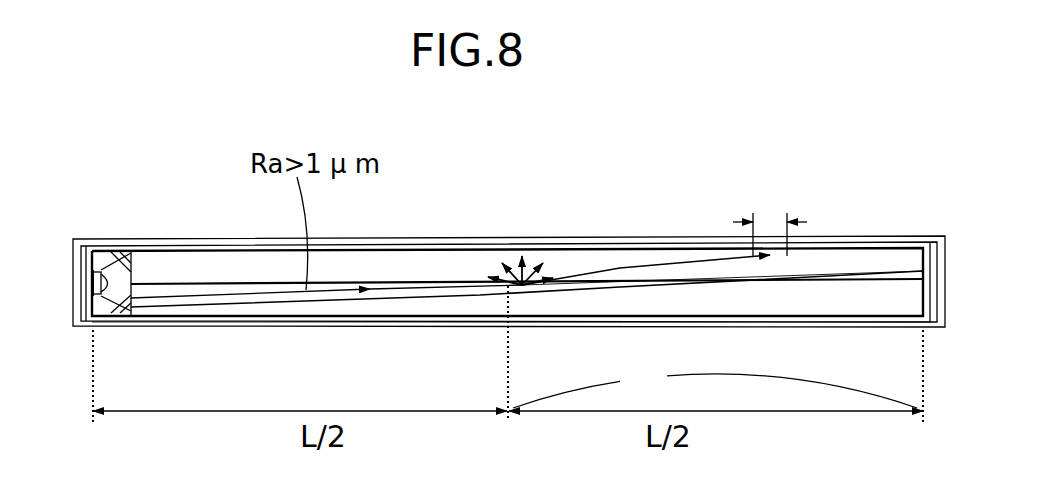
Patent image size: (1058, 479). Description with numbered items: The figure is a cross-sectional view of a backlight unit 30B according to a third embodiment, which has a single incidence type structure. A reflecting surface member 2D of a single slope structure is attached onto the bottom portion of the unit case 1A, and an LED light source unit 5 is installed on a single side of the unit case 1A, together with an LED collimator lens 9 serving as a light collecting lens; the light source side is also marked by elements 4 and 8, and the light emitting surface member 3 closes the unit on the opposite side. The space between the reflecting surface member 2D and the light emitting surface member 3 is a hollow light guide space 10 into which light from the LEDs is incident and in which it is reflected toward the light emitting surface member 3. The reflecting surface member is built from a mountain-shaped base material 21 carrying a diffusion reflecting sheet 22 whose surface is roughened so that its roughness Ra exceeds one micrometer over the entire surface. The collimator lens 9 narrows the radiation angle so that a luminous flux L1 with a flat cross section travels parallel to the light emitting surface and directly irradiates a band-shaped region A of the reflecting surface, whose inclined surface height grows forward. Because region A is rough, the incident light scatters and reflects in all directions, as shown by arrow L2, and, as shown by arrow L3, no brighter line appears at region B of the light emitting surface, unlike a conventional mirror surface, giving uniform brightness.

The backlight unit 30B is at (941, 125).
The light emitting surface member 3 is at (851, 243).
The mountain-shaped base material 21 is at (623, 306).
The unit case 1A is at (210, 320).
The hollow light guide space 10 is at (418, 272).
The diffusion reflecting sheet 22 is at (713, 278).
The LED light source unit 5 is at (101, 281).
The reflector 4 is at (104, 248).
The LED collimator lens 9 is at (132, 260).
The substrate 8 is at (103, 322).
The luminous flux L1 is at (209, 282).
The arrow of scattered reflected light L2 is at (521, 254).
The arrow of light reaching the light emitting surface L3 is at (667, 268).
The reflecting surface member 2D is at (604, 278).
The region of light emitting surface B is at (770, 219).
The irradiation region A is at (546, 300).